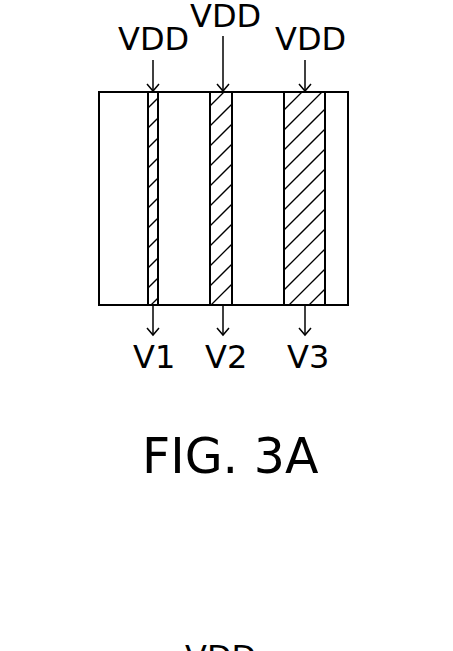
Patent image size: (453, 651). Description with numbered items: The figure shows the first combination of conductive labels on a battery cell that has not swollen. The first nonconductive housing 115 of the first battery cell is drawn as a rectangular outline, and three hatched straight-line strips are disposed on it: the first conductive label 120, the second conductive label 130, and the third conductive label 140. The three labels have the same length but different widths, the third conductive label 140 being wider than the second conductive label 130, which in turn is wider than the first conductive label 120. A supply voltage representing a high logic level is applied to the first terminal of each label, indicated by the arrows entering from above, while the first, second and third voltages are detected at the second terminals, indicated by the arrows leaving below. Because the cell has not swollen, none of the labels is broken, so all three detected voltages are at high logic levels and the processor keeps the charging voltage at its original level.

The first nonconductive housing 115 is at (99, 198).
The first conductive label 120 is at (148, 140).
The second conductive label 130 is at (218, 268).
The third conductive label 140 is at (318, 203).